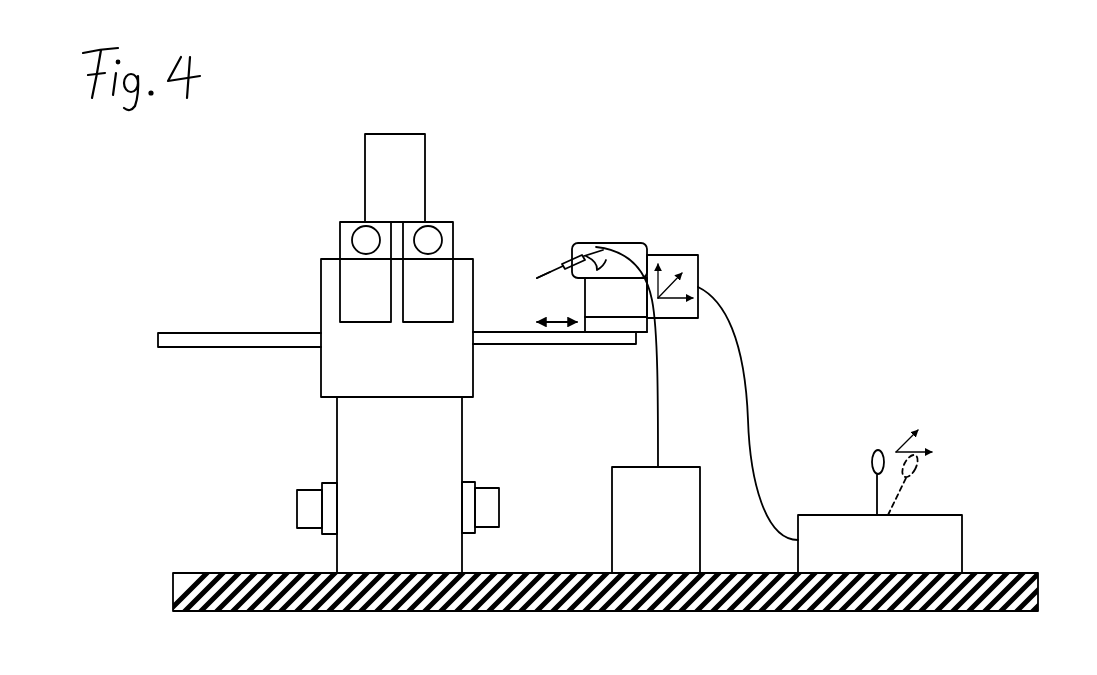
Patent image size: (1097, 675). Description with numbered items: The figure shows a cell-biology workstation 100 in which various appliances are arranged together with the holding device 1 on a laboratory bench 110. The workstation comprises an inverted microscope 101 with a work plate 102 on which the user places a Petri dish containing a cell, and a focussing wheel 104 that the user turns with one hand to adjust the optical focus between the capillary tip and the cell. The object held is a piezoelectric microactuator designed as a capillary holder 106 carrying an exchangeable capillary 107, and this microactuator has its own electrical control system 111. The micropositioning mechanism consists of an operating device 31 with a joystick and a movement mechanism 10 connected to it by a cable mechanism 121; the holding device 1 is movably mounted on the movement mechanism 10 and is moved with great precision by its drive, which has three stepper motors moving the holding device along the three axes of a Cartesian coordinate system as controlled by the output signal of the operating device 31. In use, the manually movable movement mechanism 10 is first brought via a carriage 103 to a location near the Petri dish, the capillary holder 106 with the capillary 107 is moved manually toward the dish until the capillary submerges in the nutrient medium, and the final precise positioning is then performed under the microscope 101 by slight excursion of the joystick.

The cell-biology workstation 100 is at (937, 161).
The microscope 101 is at (281, 398).
The work plate 102 is at (247, 335).
The carriage 103 is at (597, 323).
The focussing wheel 104 is at (297, 510).
The capillary holder 106 is at (565, 267).
The capillary 107 is at (543, 274).
The holding device 1 is at (622, 243).
The movement mechanism 10 is at (686, 255).
The cable mechanism 121 is at (743, 352).
The operating device 31 is at (958, 515).
The laboratory bench 110 is at (748, 612).
The electrical control system 111 is at (612, 518).